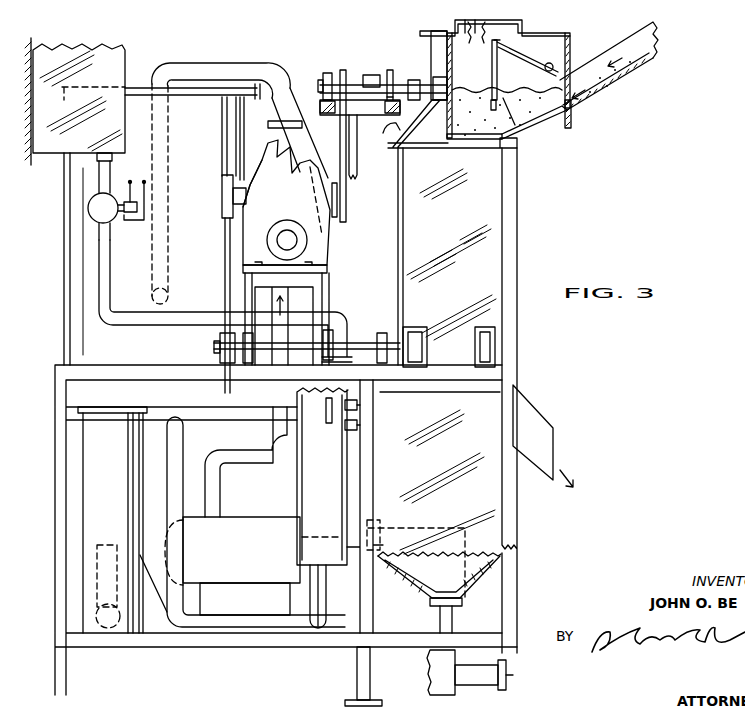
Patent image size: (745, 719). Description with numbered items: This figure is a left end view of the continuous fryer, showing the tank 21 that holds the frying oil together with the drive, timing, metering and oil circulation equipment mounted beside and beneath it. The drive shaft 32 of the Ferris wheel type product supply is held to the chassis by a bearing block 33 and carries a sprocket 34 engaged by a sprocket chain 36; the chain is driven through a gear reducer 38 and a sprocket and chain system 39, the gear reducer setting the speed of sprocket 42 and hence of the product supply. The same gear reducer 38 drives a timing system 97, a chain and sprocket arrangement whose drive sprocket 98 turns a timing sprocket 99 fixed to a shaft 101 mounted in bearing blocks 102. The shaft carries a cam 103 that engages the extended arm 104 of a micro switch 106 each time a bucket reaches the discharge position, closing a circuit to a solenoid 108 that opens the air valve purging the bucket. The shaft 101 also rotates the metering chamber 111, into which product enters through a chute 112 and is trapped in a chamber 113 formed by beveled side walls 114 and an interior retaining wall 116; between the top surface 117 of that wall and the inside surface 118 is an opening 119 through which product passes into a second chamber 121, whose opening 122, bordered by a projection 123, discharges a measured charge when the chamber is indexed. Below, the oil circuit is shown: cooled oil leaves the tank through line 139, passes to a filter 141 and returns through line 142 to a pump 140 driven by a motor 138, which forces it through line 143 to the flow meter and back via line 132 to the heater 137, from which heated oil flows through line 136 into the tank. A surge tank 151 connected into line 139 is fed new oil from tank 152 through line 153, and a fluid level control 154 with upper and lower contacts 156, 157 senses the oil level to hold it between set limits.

The tank 21 is at (487, 411).
The drive shaft 32 is at (254, 348).
The bearing block 33 is at (388, 327).
The sprocket 34 is at (228, 343).
The sprocket chain 36 is at (230, 237).
The gear reducer 38 is at (291, 200).
The sprocket and chain system 39 is at (192, 240).
The sprocket 42 is at (250, 200).
The timing system 97 is at (349, 183).
The drive sprocket 98 is at (340, 216).
The timing sprocket 99 is at (342, 70).
The shaft 101 is at (318, 83).
The bearing blocks 102 is at (414, 80).
The cam 103 is at (393, 72).
The extended arm 104 is at (391, 98).
The micro switch 106 is at (368, 77).
The solenoid 108 is at (540, 417).
The metering chamber 111 is at (554, 48).
The chute 112 is at (627, 72).
The chamber 113 is at (587, 90).
The beveled side walls 114 is at (523, 53).
The interior retaining wall 116 is at (497, 82).
The top surface 117 is at (505, 97).
The inside surface 118 is at (565, 66).
The opening 119 is at (493, 110).
The second chamber 121 is at (440, 56).
The opening 122 is at (482, 47).
The projection 123 is at (472, 47).
The line 132 is at (222, 64).
The line 136 is at (300, 143).
The heater 137 is at (79, 224).
The motor 138 is at (432, 527).
The line 139 is at (357, 623).
The pump 140 is at (252, 556).
The filter 141 is at (117, 479).
The line 142 is at (155, 540).
The line 143 is at (258, 446).
The surge tank 151 is at (289, 503).
The tank 152 is at (125, 67).
The line 153 is at (107, 278).
The fluid level control 154 is at (352, 423).
The upper contact 156 is at (350, 403).
The lower contact 157 is at (327, 423).